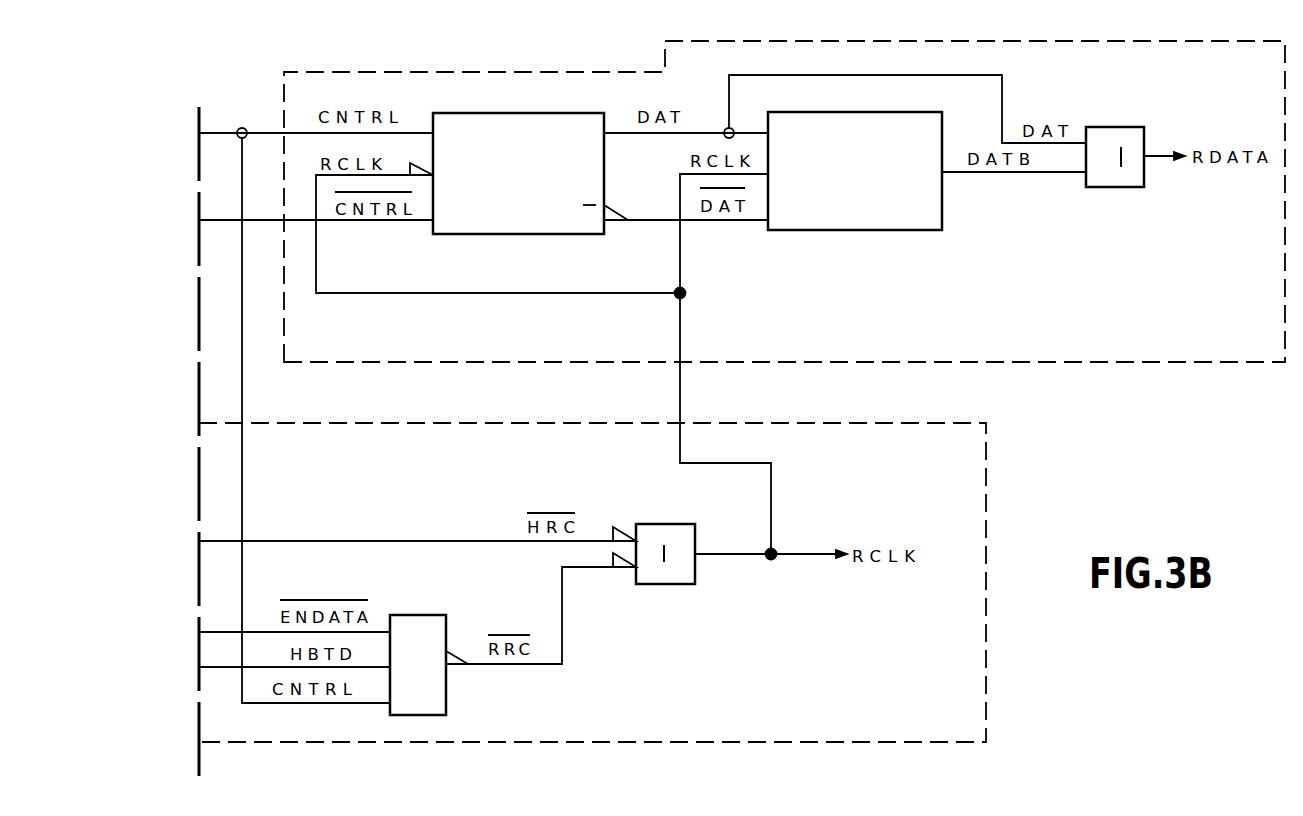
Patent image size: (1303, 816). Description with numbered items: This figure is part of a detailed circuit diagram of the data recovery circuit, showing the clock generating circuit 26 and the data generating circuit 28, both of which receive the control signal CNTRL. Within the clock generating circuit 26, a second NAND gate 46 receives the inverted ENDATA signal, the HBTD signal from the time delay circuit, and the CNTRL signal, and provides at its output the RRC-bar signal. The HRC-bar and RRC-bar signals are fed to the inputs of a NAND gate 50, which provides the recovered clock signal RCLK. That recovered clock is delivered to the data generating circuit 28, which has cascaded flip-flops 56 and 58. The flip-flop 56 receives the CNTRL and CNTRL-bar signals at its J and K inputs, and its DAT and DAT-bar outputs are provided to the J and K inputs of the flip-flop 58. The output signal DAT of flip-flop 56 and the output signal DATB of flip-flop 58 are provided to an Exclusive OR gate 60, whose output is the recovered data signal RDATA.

The clock generating circuit 26 is at (513, 423).
The data generating circuit 28 is at (602, 72).
The second NAND gate 46 is at (446, 690).
The NAND gate 50 is at (676, 524).
The flip-flop 56 is at (536, 234).
The flip-flop 58 is at (904, 221).
The Exclusive OR gate 60 is at (1110, 127).